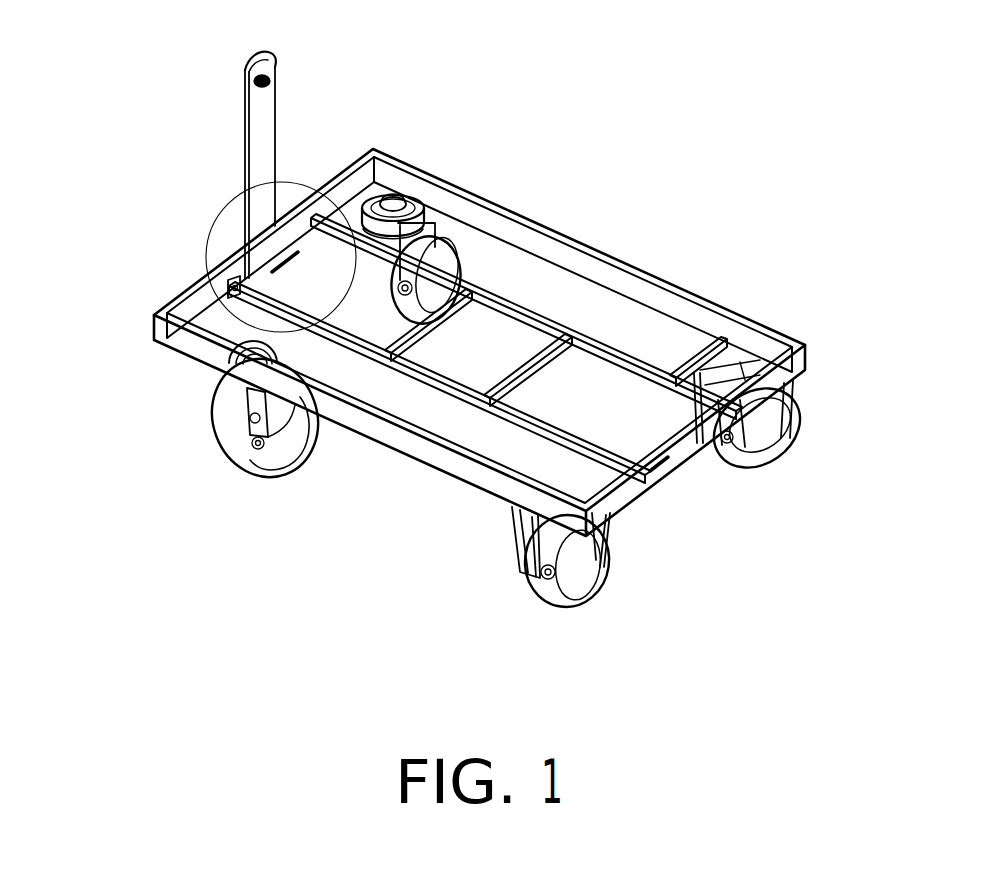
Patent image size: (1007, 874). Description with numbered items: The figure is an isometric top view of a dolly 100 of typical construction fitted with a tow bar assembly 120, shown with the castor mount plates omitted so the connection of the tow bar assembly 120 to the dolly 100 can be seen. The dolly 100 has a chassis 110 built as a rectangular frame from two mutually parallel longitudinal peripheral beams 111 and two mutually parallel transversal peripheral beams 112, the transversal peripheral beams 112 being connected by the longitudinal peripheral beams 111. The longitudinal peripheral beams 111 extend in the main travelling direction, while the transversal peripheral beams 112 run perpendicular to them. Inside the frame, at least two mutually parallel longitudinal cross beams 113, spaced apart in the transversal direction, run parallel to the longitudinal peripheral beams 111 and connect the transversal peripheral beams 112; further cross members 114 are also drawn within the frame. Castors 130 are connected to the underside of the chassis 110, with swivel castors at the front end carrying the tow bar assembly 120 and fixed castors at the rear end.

The dolly 100 is at (585, 200).
The chassis 110 is at (706, 290).
The longitudinal peripheral beam 111 is at (402, 162).
The transversal peripheral beam 112 is at (177, 302).
The longitudinal cross beam 113 is at (358, 345).
The cross bar 114 is at (433, 327).
The tow bar assembly 120 is at (232, 162).
The castor 130 is at (228, 409).